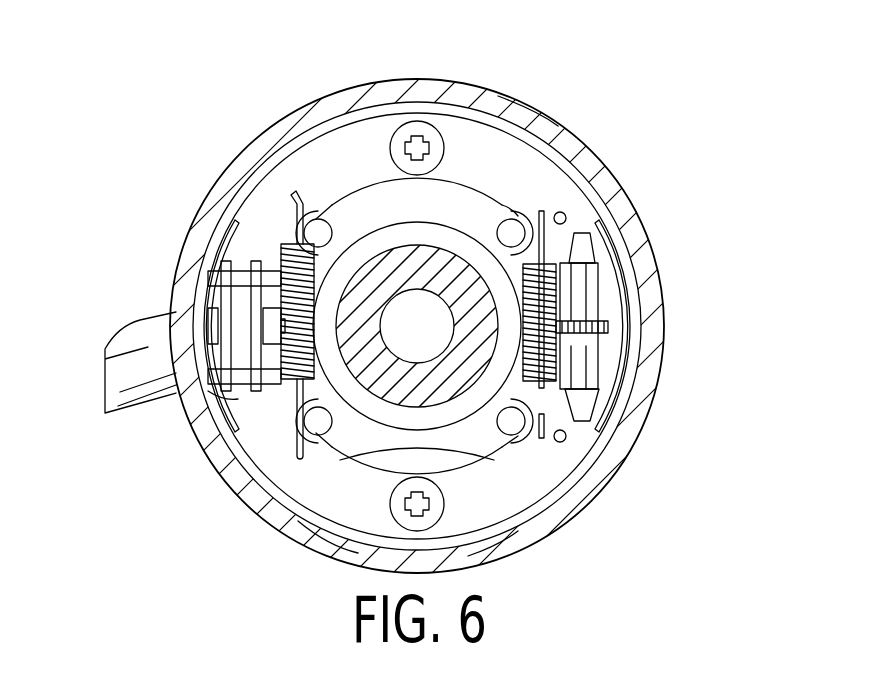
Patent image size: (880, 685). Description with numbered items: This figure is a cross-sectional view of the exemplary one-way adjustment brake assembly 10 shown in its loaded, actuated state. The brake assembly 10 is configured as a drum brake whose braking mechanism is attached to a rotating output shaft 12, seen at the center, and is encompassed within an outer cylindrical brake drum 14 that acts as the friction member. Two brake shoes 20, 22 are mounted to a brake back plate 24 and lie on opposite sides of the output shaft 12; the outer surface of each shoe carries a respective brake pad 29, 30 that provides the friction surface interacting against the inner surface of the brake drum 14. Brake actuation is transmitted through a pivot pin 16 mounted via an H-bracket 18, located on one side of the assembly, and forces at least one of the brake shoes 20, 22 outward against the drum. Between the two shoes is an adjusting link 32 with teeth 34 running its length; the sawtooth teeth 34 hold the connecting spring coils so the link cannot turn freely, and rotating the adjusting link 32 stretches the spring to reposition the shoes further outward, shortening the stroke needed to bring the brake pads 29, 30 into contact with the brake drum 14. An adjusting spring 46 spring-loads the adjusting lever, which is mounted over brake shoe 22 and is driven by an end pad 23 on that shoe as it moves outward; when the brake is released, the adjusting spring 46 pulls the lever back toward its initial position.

The brake assembly 10 is at (148, 118).
The output shaft 12 is at (422, 306).
The brake drum 14 is at (420, 80).
The pivot pin 16 is at (211, 323).
The H-bracket 18 is at (228, 401).
The brake shoe 20 is at (355, 148).
The brake shoe 22 is at (343, 491).
The end pad 23 is at (185, 366).
The brake back plate 24 is at (482, 210).
The brake pad 29 is at (525, 128).
The brake pad 30 is at (511, 521).
The adjusting link 32 is at (605, 297).
The teeth 34 is at (590, 345).
The adjusting spring 46 is at (320, 245).